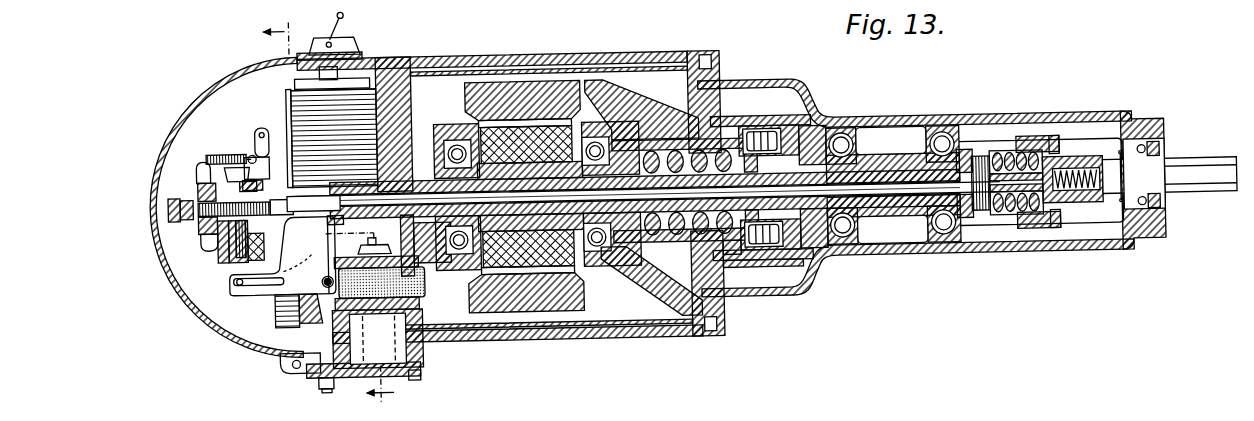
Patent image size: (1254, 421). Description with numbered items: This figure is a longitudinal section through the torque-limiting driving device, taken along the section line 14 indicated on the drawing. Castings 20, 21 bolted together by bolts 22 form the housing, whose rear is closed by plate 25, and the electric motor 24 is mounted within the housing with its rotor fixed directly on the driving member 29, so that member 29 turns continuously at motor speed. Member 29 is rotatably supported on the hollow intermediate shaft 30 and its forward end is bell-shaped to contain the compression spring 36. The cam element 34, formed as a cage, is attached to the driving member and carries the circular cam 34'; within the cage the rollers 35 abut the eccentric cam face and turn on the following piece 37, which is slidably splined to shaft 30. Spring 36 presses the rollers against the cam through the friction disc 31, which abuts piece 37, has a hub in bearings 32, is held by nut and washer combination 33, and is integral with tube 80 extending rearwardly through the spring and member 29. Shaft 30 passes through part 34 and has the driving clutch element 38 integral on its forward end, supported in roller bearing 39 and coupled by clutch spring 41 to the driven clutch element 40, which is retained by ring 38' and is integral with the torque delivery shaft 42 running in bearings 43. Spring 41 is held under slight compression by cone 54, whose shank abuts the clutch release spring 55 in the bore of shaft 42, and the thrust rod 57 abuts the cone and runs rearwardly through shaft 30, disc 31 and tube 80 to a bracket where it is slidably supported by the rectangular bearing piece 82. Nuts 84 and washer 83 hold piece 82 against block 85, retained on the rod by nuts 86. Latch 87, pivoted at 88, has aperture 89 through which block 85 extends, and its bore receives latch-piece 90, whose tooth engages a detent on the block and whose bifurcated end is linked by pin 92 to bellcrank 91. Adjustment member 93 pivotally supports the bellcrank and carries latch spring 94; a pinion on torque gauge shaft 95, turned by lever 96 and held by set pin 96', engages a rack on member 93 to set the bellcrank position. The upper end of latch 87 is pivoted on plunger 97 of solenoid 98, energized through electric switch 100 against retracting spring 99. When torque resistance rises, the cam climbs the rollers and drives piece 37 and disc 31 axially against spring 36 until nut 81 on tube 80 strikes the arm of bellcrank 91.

The section line 14- 14 is at (317, 214).
The casting 20 is at (525, 57).
The casting 21 is at (793, 91).
The bolts 22 is at (708, 62).
The electric motor 24 is at (575, 85).
The plate 25 is at (222, 82).
The driving member 29 is at (590, 138).
The hollow intermediate shaft 30 is at (863, 166).
The friction disc 31 is at (743, 274).
The bearings 32 is at (467, 140).
The nut and washer combination 33 is at (437, 158).
The cam element 34 is at (761, 154).
The circular cam 34' is at (823, 159).
The rollers 35 is at (755, 142).
The compression spring 36 is at (680, 243).
The following piece 37 is at (738, 262).
The driving clutch element 38 is at (1047, 155).
The ring 38' is at (1074, 175).
The roller bearing 39 is at (860, 238).
The driven clutch element 40 is at (1040, 144).
The clutch spring 41 is at (1003, 160).
The torque delivery shaft 42 is at (1182, 199).
The bearings 43 is at (1147, 163).
The cone 54 is at (980, 165).
The clutch release spring 55 is at (1090, 216).
The thrust rod 57 is at (883, 193).
The tube 80 is at (652, 236).
The nut 81 is at (332, 229).
The rectangular bearing piece 82 is at (204, 237).
The washer 83 is at (184, 211).
The nuts 84 is at (198, 220).
The block 85 is at (220, 228).
The nuts 86 is at (269, 200).
The latch 87 is at (258, 136).
The pivot 88 is at (263, 240).
The aperture 89 is at (237, 151).
The latch-piece 90 is at (233, 262).
The bellcrank 91 is at (282, 256).
The pin 92 is at (239, 283).
The adjustment member 93 is at (314, 300).
The latch spring 94 is at (274, 310).
The torque gauge shaft 95 is at (375, 360).
The lever 96 is at (428, 379).
The set pin 96' is at (311, 396).
The plunger 97 is at (285, 129).
The solenoid 98 is at (334, 138).
The retracting spring 99 is at (208, 155).
The electric switch 100 is at (350, 37).